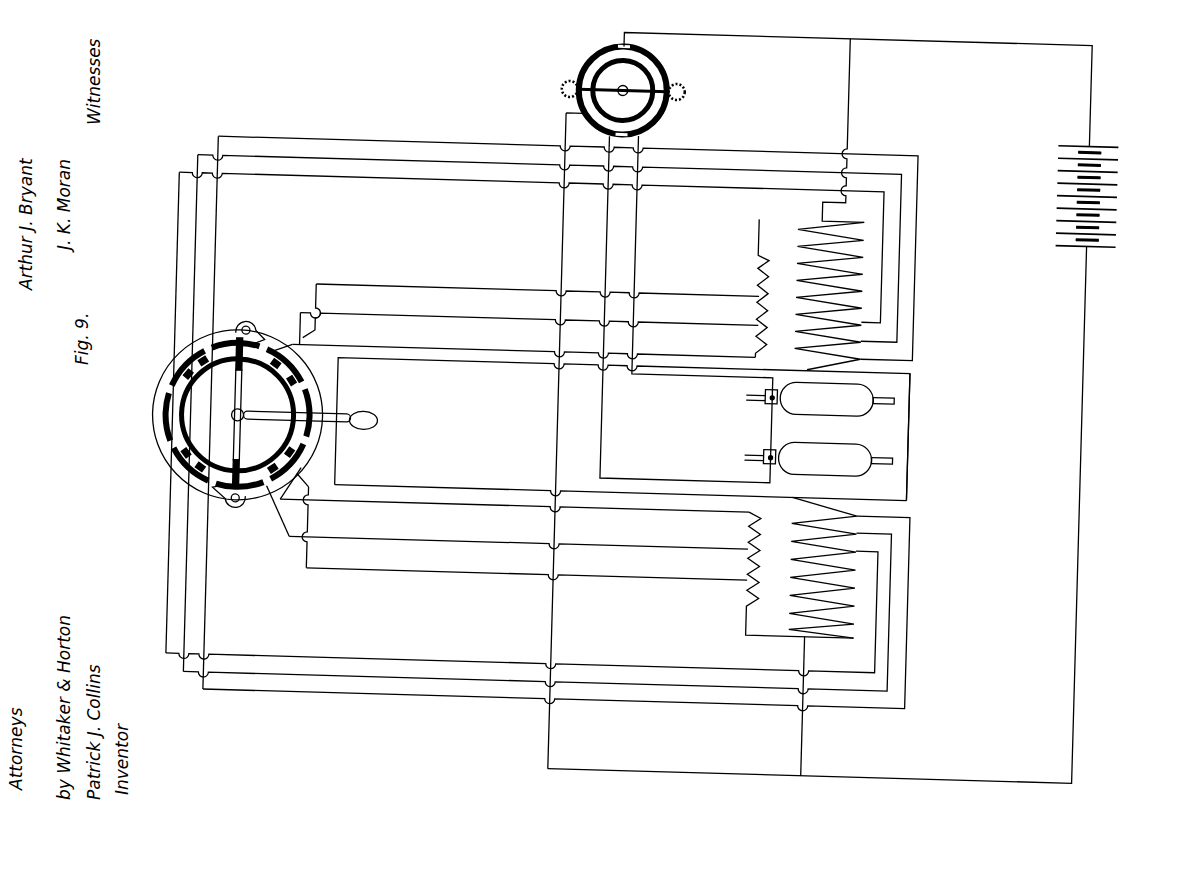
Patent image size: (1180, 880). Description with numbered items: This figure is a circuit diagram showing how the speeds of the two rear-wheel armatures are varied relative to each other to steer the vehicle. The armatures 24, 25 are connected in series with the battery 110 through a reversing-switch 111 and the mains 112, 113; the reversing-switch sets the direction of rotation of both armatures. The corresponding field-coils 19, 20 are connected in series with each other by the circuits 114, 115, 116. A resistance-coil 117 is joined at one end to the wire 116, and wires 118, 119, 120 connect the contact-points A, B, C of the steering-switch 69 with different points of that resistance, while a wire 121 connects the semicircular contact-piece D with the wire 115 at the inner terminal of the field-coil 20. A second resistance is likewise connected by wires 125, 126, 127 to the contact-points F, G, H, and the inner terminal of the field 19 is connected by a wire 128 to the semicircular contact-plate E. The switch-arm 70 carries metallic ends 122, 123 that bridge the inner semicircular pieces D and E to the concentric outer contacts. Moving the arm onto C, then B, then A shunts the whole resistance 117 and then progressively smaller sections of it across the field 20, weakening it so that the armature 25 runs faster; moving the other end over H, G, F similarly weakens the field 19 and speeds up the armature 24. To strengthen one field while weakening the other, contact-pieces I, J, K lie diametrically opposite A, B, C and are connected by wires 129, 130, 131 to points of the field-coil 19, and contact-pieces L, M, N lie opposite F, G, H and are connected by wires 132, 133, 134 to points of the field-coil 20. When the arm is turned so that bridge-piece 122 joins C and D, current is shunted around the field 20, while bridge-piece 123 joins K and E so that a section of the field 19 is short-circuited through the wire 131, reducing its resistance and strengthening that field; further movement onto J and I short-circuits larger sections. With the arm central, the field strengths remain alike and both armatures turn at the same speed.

The reversing-switch 111 is at (630, 408).
The main 112 is at (921, 33).
The battery 110 is at (1112, 197).
The circuit wire 116 is at (840, 117).
The resistance-coil 117 is at (747, 287).
The field-coil 20 is at (800, 283).
The wire 134 is at (314, 147).
The wire 133 is at (190, 226).
The wire 132 is at (287, 184).
The wire 129 is at (172, 625).
The wire 130 is at (268, 683).
The wire 131 is at (362, 700).
The wire 118 is at (484, 292).
The wire 119 is at (512, 321).
The wire 120 is at (530, 353).
The wire 121 is at (462, 365).
The wire 128 is at (492, 492).
The circuit wire 115 is at (908, 451).
The armature 25 is at (820, 399).
The armature 24 is at (818, 459).
The wire 127 is at (606, 508).
The wire 126 is at (630, 545).
The wire 125 is at (606, 576).
The field-coil 19 is at (798, 598).
The circuit wire 114 is at (812, 650).
The main 113 is at (1012, 770).
The steering-switch 69 is at (237, 415).
The switch-arm 70 is at (240, 441).
The metallic end 122 is at (240, 331).
The metallic end 123 is at (244, 512).
The contact-point A is at (306, 408).
The contact-point B is at (282, 383).
The contact-point C is at (268, 356).
The semicircular contact-piece D is at (300, 410).
The semicircular contact-piece E is at (296, 442).
The contact-point F is at (302, 444).
The contact-point G is at (302, 472).
The contact-point H is at (266, 492).
The contact-piece I is at (176, 452).
The contact-piece J is at (188, 468).
The contact-piece K is at (212, 482).
The contact-piece L is at (175, 396).
The contact-piece M is at (194, 380).
The contact-piece N is at (214, 373).